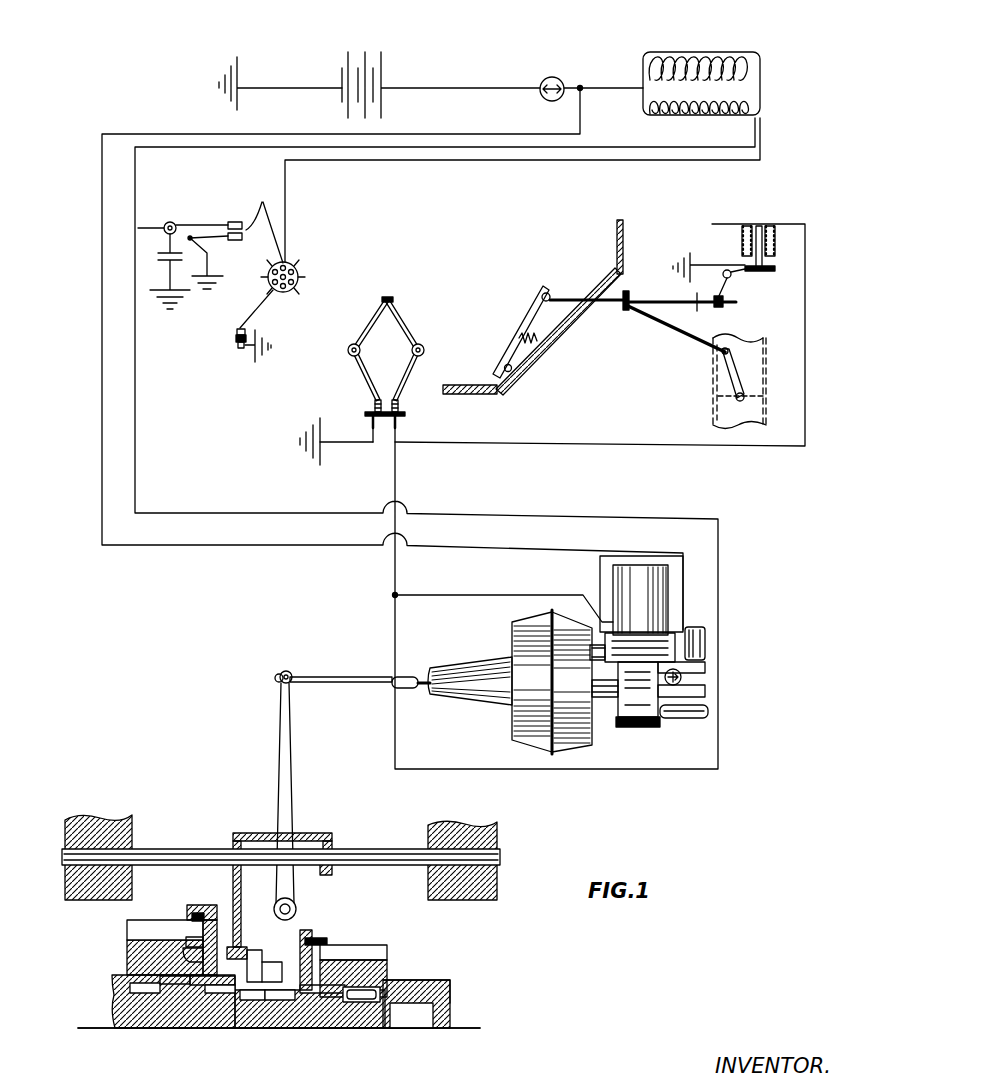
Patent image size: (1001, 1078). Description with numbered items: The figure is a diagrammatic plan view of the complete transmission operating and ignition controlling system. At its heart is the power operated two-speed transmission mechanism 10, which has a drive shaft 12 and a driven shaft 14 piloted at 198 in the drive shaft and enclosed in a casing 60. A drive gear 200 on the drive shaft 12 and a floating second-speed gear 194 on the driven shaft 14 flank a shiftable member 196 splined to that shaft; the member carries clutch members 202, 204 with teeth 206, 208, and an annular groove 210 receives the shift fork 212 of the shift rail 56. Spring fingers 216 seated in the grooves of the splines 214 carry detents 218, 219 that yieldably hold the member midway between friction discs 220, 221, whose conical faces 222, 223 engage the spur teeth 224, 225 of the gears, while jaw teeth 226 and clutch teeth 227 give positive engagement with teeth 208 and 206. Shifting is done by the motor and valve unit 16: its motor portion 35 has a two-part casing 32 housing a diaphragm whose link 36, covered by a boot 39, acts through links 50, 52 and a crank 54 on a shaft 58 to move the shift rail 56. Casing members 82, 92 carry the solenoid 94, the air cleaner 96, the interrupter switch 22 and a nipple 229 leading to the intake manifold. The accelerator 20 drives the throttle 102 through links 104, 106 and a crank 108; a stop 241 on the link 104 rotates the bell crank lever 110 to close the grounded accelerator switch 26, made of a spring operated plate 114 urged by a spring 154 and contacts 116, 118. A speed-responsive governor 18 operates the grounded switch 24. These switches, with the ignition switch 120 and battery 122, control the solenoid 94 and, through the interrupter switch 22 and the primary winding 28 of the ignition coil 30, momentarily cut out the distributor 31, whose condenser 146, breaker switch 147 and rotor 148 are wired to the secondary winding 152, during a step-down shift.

The power operated two-speeds forward selective gear transmission mechanism 10 is at (450, 985).
The drive shaft 12 is at (442, 1010).
The driven shaft 14 is at (130, 1018).
The motor and valve unit 16 is at (586, 662).
The vehicle speed-responsive governor 18 is at (410, 330).
The accelerator 20 is at (537, 295).
The interrupter switch 22 is at (706, 690).
The governor operated switch 24 is at (368, 408).
The accelerator operated switch 26 is at (742, 248).
The primary winding 28 is at (708, 117).
The ignition coil 30 is at (718, 79).
The distributor 31 is at (264, 221).
The two-part cylinder or casing 32 is at (578, 745).
The motor portion 35 is at (600, 722).
The link 36 is at (422, 676).
The boot 39 is at (470, 692).
The link 50 is at (330, 678).
The link 52 is at (292, 742).
The crank 54 is at (278, 870).
The shift rail 56 is at (362, 850).
The shaft 58 is at (275, 905).
The casing 60 is at (103, 832).
The casing member 82 is at (700, 667).
The casing member 92 is at (655, 640).
The solenoid 94 is at (618, 585).
The air cleaner 96 is at (706, 640).
The throttle or butterfly 102 is at (713, 405).
The link 104 is at (607, 305).
The link 106 is at (667, 330).
The crank 108 is at (740, 382).
The bell crank lever 110 is at (729, 286).
The spring operated plate 114 is at (766, 275).
The contact 116 is at (771, 268).
The contact 118 is at (742, 262).
The ignition switch 120 is at (542, 84).
The battery 122 is at (373, 52).
The condenser 146 is at (184, 260).
The breaker switch 147 is at (228, 224).
The rotor 148 is at (300, 268).
The secondary winding 152 is at (681, 56).
The spring 154 is at (754, 250).
The second-speed gear 194 is at (130, 960).
The shiftable member 196 is at (254, 955).
The pilot 198 is at (395, 978).
The drive gear 200 is at (375, 970).
The clutch member 202 is at (190, 960).
The clutch member 204 is at (268, 995).
The teeth 206 is at (200, 950).
The teeth 208 is at (258, 976).
The annular groove 210 is at (215, 976).
The shift fork 212 is at (241, 936).
The splines 214 is at (326, 990).
The spring fingers 216 is at (233, 988).
The detent 218 is at (245, 985).
The detent 219 is at (278, 1000).
The friction disc 220 is at (200, 912).
The friction disc 221 is at (322, 938).
The conical friction face 222 is at (193, 912).
The conical friction face 223 is at (325, 943).
The spur teeth 224 is at (130, 935).
The spur teeth 225 is at (372, 953).
The jaw teeth 226 is at (348, 1000).
The clutch teeth 227 is at (190, 940).
The nipple 229 is at (692, 720).
The stop 241 is at (705, 308).